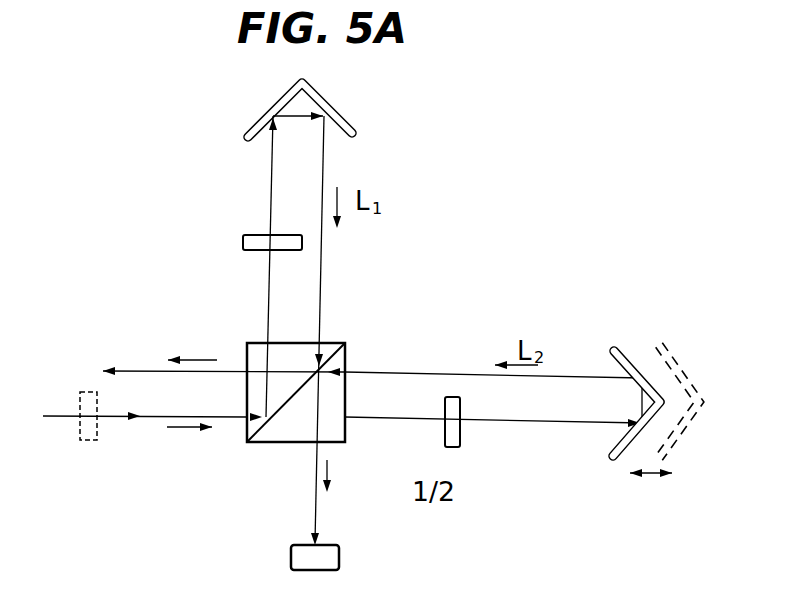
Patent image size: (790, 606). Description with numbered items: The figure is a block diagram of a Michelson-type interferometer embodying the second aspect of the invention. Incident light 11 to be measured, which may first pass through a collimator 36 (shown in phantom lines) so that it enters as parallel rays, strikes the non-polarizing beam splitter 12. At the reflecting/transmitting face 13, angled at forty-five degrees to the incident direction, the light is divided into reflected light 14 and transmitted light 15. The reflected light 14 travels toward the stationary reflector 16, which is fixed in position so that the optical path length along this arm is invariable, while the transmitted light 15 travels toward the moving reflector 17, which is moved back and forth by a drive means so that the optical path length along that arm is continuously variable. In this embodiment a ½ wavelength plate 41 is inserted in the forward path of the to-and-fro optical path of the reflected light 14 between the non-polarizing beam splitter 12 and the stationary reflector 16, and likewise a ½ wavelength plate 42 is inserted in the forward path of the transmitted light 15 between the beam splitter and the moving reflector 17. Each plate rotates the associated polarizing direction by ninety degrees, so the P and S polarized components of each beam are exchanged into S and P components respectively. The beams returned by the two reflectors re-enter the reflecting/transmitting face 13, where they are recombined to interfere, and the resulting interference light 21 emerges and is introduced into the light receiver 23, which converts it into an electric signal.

The incident light 11 is at (57, 416).
The non-polarizing beam splitter 12 is at (248, 348).
The reflecting/transmitting face 13 is at (250, 427).
The reflected light 14 is at (268, 277).
The transmitted light 15 is at (385, 420).
The stationary reflector 16 is at (338, 110).
The moving reflector 17 is at (623, 461).
The interference light 21 is at (317, 508).
The light receiver 23 is at (340, 558).
The collimator 36 is at (87, 440).
The ½ wavelength plate 41 is at (255, 235).
The ½ wavelength plate 42 is at (458, 435).